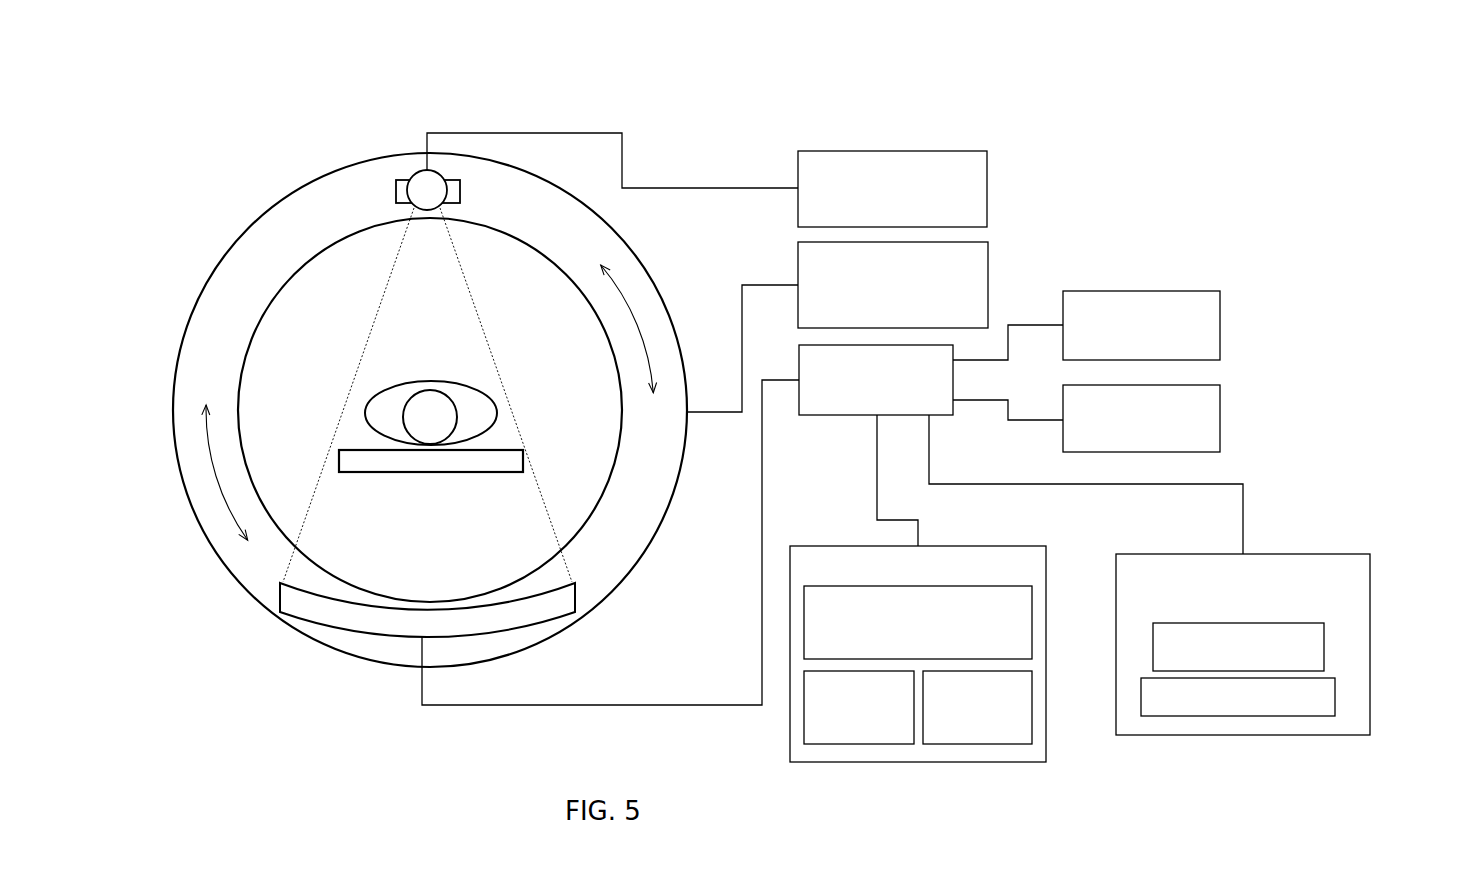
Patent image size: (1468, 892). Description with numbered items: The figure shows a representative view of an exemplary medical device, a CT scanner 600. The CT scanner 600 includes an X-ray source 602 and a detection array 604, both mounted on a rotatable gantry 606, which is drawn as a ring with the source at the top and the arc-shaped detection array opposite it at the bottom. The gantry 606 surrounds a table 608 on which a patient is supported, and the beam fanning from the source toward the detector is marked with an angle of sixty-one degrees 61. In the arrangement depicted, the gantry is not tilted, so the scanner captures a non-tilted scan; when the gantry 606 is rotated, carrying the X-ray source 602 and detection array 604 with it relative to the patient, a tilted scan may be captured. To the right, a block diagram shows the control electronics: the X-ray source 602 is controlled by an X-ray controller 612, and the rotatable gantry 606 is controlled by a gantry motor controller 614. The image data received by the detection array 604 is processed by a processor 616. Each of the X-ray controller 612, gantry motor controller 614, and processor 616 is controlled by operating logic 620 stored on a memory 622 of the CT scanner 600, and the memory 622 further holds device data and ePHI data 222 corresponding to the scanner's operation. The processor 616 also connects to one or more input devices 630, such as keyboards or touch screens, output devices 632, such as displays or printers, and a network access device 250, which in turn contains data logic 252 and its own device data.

The CT scanner 600 is at (1208, 138).
The X-ray source 602 is at (408, 163).
The detection array 604 is at (368, 642).
The rotatable gantry 606 is at (212, 365).
The table 608 is at (438, 474).
The fan beam angle (61 degrees) 61 is at (423, 360).
The X-ray controller 612 is at (987, 192).
The gantry motor controller 614 is at (988, 268).
The processor 616 is at (820, 417).
The operating logic 620 is at (1032, 623).
The memory 622 is at (993, 546).
The input devices 630 is at (1220, 328).
The output devices 632 is at (1220, 418).
The network access device 250 is at (1289, 554).
The data logic 252 is at (1324, 647).
The ePHI data 222 is at (978, 744).